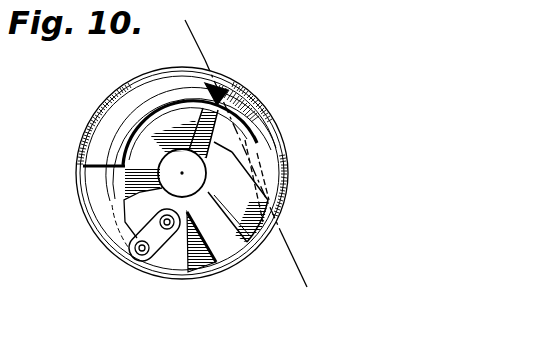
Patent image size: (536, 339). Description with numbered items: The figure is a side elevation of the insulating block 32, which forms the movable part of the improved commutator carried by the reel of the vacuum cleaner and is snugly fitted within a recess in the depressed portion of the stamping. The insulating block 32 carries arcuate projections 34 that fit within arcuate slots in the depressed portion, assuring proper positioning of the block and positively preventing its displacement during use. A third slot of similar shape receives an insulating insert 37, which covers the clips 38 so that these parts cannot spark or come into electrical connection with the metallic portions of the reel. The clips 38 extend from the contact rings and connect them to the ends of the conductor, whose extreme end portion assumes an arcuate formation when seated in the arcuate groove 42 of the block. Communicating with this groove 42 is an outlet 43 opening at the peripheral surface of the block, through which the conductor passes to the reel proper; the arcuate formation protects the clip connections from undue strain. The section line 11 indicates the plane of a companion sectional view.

The section line 11- 11 is at (192, 23).
The insulating block 32 is at (182, 170).
The arcuate projections 34 is at (103, 115).
The insulating insert 37 is at (205, 258).
The clips 38 is at (167, 229).
The arcuate groove 42 is at (152, 112).
The outlet 43 is at (258, 150).